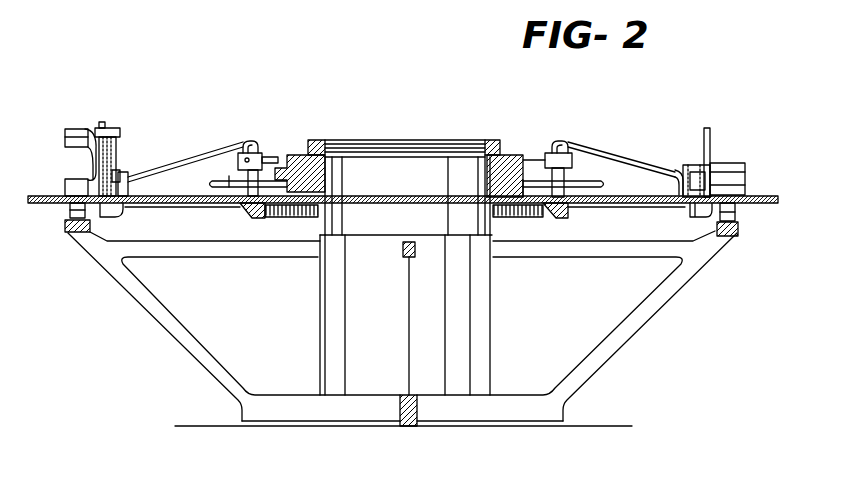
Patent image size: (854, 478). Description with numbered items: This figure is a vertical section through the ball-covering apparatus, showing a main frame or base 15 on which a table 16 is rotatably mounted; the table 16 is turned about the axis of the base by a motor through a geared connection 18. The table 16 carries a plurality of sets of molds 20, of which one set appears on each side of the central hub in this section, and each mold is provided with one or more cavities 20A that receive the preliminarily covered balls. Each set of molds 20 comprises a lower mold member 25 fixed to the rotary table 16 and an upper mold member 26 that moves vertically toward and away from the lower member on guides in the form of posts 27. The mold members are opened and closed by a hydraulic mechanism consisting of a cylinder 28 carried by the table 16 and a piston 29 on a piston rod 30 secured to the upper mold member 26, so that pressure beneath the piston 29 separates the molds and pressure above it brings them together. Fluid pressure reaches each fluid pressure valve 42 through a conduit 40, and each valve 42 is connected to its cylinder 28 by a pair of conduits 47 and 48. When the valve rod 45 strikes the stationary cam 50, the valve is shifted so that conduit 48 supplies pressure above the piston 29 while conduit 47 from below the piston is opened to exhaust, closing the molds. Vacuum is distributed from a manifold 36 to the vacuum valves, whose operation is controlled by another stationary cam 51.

The main frame or base 15 is at (488, 300).
The table 16 is at (42, 206).
The geared connection 18 is at (272, 222).
The set of molds 20 is at (75, 128).
The mold cavity 20A is at (80, 141).
The lower mold member 25 is at (64, 182).
The upper mold member 26 is at (63, 128).
The posts 27 is at (103, 122).
The cylinder 28 is at (116, 216).
The piston 29 is at (118, 160).
The piston rod 30 is at (117, 150).
The manifold 36 is at (229, 177).
The conduit 40 is at (212, 182).
The fluid pressure valve 42 is at (256, 152).
The valve rod 45 is at (274, 158).
The conduit 47 is at (132, 184).
The conduit 48 is at (118, 174).
The stationary cam 50 is at (550, 151).
The stationary cam 51 is at (520, 216).